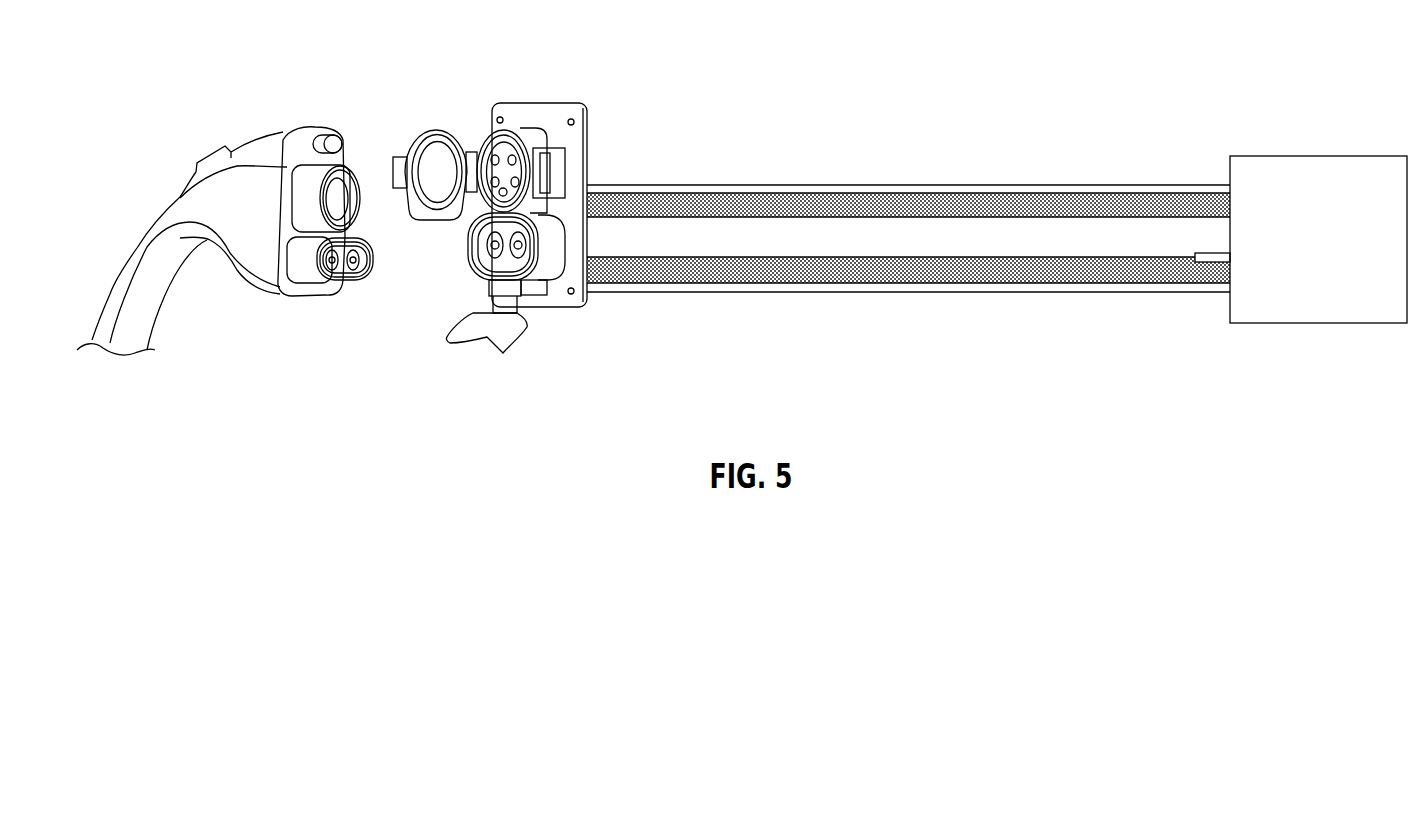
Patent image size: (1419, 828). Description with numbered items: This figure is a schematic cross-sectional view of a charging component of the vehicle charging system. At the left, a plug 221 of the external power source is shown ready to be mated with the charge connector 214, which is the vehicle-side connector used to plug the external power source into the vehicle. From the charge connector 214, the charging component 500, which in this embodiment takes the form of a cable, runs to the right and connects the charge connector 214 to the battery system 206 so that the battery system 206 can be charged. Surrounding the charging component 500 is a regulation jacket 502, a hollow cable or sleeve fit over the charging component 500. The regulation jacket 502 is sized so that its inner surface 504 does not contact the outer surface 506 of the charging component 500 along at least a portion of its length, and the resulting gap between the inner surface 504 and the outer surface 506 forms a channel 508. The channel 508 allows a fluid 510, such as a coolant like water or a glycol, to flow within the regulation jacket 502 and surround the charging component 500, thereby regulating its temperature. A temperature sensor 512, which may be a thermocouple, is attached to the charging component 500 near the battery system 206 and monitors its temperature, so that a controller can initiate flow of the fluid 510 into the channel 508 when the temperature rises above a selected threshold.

The plug 221 is at (292, 134).
The charge connector 214 is at (517, 121).
The charging component 500 is at (1021, 237).
The regulation jacket 502 is at (900, 186).
The inner surface 504 is at (797, 194).
The outer surface 506 is at (712, 216).
The fluid 510 is at (635, 200).
The channel 508 is at (772, 271).
The temperature sensor 512 is at (1220, 266).
The battery system 206 is at (1318, 155).